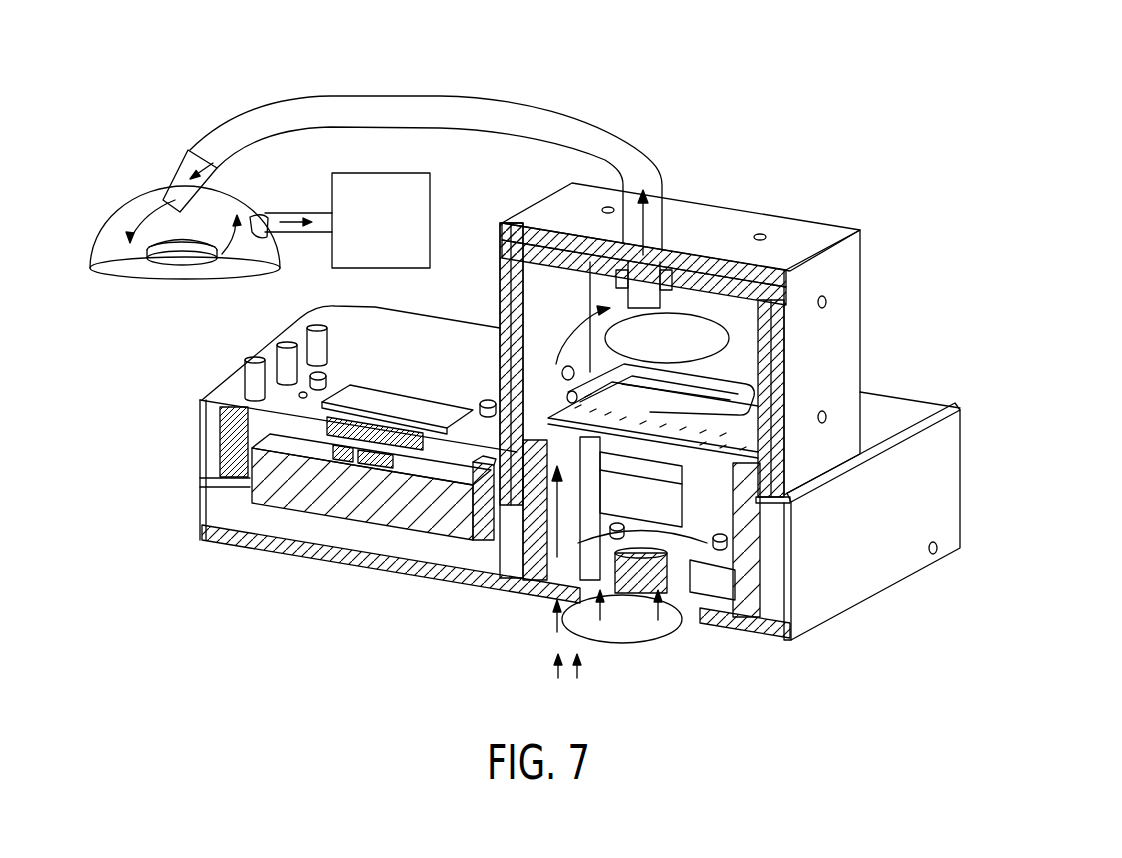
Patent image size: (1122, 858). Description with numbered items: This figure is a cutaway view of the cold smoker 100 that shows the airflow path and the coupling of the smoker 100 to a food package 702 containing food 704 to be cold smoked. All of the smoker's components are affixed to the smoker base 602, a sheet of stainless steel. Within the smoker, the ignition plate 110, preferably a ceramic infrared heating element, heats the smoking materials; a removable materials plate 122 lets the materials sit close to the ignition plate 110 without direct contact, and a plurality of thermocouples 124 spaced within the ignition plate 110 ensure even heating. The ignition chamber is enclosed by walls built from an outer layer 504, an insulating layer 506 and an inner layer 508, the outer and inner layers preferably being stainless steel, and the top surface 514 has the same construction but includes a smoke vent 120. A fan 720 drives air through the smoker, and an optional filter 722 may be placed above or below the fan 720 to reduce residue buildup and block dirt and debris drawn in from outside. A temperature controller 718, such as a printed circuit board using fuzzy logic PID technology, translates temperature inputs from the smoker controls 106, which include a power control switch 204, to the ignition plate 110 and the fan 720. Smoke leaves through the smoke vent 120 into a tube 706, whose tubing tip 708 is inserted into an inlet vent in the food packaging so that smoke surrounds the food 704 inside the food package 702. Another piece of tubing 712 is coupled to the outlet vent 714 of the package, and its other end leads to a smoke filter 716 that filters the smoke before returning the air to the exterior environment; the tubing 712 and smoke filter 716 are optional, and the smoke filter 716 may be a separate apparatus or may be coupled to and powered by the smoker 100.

The smoker 100 is at (907, 655).
The smoker controls 106 is at (445, 347).
The ignition plate 110 is at (653, 426).
The smoke vent 120 is at (653, 253).
The materials plate 122 is at (683, 331).
The thermocouples 124 is at (753, 387).
The power control switch 204 is at (252, 388).
The outer layer 504 is at (795, 333).
The insulating layer 506 is at (505, 257).
The inner layer 508 is at (772, 445).
The top surface 514 is at (745, 213).
The smoker base 602 is at (323, 503).
The food package 702 is at (117, 168).
The food 704 is at (158, 262).
The tube 706 is at (610, 123).
The tubing tip 708 is at (174, 188).
The tubing 712 is at (317, 210).
The outlet vent 714 is at (252, 222).
The smoke filter 716 is at (385, 173).
The temperature controller 718 is at (280, 435).
The fan 720 is at (667, 597).
The filter 722 is at (627, 643).